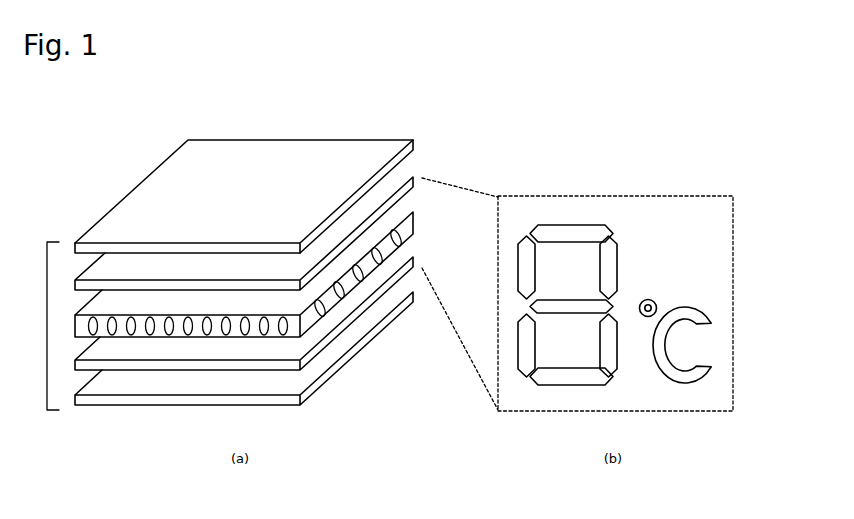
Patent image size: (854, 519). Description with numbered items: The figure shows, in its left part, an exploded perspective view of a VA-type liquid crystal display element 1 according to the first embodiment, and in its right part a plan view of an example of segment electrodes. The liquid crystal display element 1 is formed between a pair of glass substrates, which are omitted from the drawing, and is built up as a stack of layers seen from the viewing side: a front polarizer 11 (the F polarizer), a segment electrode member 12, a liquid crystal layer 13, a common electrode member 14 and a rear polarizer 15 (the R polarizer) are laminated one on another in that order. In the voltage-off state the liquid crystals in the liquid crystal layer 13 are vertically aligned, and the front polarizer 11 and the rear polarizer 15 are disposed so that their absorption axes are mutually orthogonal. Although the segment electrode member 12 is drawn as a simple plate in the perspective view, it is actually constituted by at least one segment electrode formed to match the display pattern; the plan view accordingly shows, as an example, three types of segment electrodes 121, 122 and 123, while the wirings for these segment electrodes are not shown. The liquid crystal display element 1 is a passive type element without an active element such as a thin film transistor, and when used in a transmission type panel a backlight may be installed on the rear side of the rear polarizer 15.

The liquid crystal display element 1 is at (47, 292).
The front polarizer 11 is at (399, 142).
The segment electrode member 12 is at (407, 179).
The liquid crystal layer 13 is at (401, 220).
The common electrode member 14 is at (402, 259).
The rear polarizer 15 is at (386, 308).
The segment electrode 121 is at (620, 213).
The segment electrode 122 is at (650, 298).
The segment electrode 123 is at (712, 313).